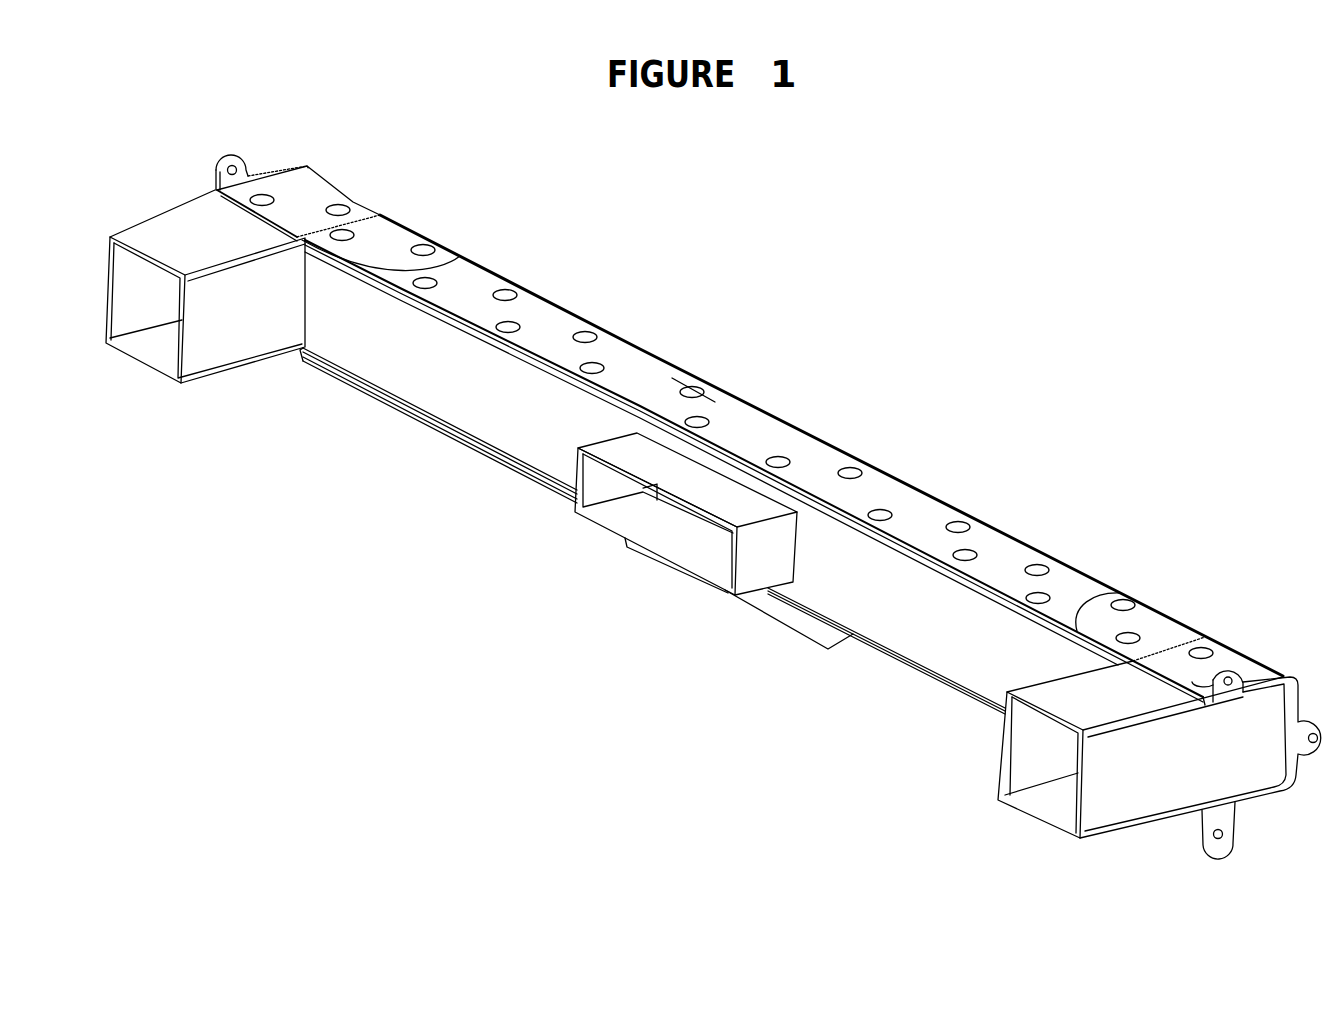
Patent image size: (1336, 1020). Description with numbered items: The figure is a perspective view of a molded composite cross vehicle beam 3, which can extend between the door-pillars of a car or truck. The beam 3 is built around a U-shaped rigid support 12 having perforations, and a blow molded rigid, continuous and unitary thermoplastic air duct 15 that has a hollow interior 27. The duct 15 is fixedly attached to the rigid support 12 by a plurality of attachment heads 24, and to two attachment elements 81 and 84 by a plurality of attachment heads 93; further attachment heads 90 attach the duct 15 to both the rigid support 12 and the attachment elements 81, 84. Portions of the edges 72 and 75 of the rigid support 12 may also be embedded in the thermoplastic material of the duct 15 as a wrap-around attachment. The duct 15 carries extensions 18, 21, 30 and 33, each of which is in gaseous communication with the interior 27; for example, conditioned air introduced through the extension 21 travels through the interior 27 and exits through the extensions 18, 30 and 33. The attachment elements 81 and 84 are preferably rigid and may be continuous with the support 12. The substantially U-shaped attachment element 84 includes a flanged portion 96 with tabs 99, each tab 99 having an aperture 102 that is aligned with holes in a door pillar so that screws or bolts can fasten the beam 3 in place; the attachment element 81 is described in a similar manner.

The cross vehicle beam 3 is at (412, 662).
The rigid support 12 is at (791, 464).
The air duct 15 is at (410, 367).
The extension 18 is at (817, 635).
The extension 21 is at (740, 580).
The attachment heads 24 is at (505, 294).
The hollow interior 27 is at (1060, 764).
The extension 30 is at (1136, 772).
The extension 33 is at (140, 362).
The edge 72 is at (908, 545).
The edge 75 is at (443, 426).
The attachment element 81 is at (315, 190).
The attachment element 84 is at (1230, 657).
The attachment heads 90 is at (423, 250).
The attachment heads 93 is at (343, 212).
The flanged portion 96 is at (287, 162).
The tabs 99 is at (227, 157).
The aperture 102 is at (218, 185).